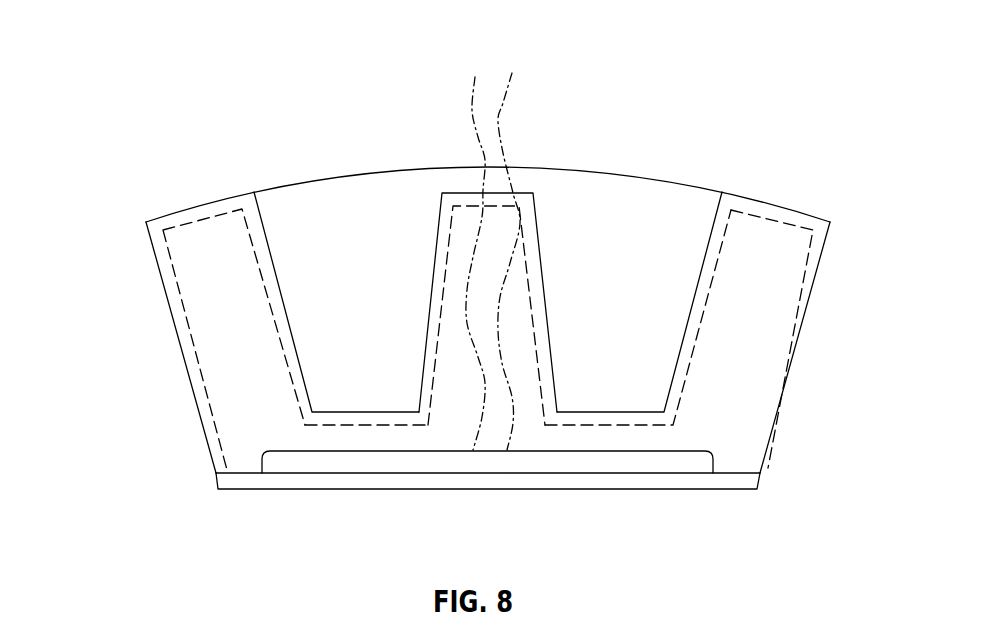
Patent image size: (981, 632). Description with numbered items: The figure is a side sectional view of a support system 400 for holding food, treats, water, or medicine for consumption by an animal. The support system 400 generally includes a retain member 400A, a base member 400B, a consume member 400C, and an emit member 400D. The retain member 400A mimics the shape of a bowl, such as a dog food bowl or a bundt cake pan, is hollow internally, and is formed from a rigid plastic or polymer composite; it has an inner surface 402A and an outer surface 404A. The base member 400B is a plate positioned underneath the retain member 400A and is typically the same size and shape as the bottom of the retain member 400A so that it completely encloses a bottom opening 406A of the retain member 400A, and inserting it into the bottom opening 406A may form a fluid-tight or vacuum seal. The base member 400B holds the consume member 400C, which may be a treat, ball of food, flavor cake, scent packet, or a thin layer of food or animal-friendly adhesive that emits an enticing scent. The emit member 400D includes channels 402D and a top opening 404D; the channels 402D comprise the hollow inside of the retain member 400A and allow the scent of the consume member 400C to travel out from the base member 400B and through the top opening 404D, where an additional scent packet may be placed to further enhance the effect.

The support system 400 is at (855, 63).
The retain member 400A is at (118, 224).
The base member 400B is at (287, 490).
The consume member 400C is at (617, 463).
The emit member 400D is at (535, 140).
The inner surface 402A is at (683, 387).
The channels 402D is at (183, 265).
The outer surface 404A is at (167, 318).
The top opening 404D is at (497, 195).
The bottom opening 406A is at (760, 472).